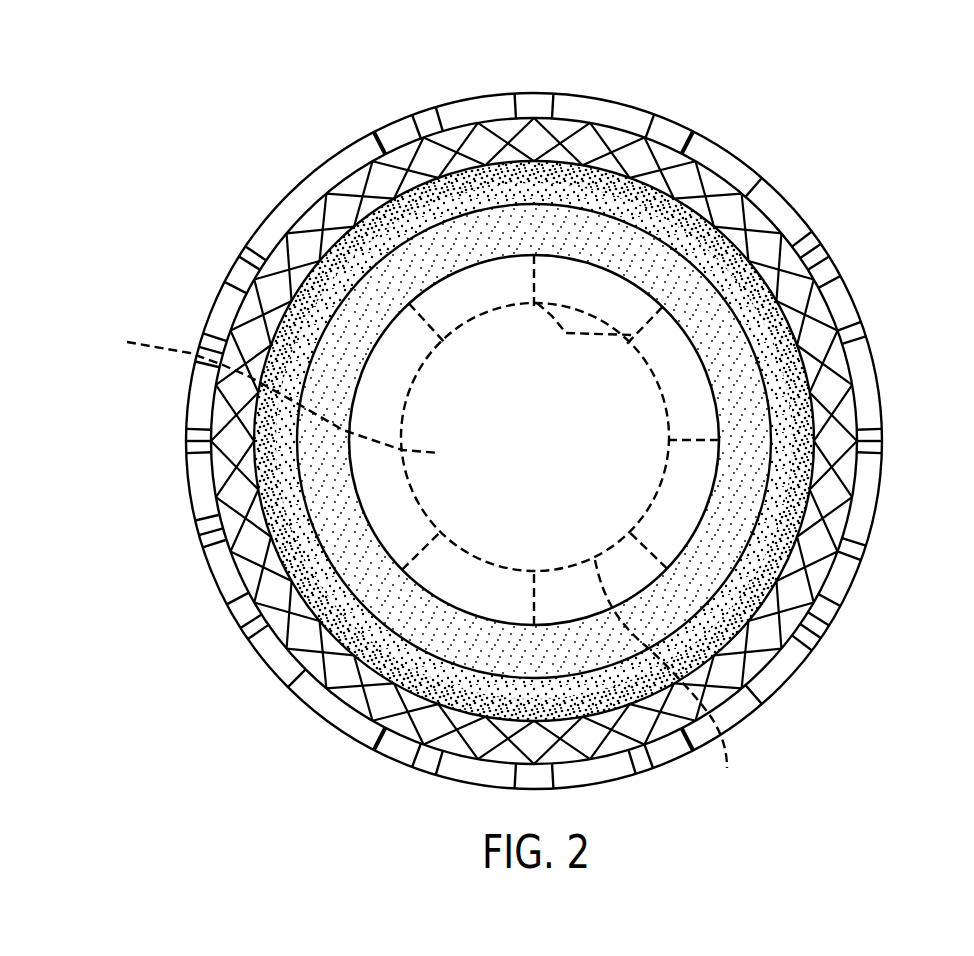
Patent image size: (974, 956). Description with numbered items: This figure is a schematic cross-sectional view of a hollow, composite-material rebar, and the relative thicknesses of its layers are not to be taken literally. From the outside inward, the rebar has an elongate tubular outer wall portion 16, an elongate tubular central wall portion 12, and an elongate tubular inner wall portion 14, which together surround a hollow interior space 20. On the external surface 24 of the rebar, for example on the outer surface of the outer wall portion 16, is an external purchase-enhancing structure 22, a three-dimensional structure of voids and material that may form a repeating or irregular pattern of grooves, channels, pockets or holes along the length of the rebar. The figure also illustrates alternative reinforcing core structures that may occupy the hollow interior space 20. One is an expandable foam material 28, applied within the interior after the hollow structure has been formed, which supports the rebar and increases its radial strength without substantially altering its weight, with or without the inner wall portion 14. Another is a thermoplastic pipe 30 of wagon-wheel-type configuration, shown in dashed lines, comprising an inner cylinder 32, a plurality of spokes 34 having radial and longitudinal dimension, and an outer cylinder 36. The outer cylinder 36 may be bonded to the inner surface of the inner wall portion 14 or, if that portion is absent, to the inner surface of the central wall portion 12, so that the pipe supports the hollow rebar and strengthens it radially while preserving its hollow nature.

The external surface 24 is at (678, 112).
The external purchase-enhancing structure 22 is at (733, 167).
The elongate tubular outer wall portion 16 is at (760, 252).
The elongate tubular central wall portion 12 is at (777, 345).
The elongate tubular inner wall portion 14 is at (747, 445).
The hollow interior space 20 is at (524, 449).
The outer cylinder 36 is at (698, 357).
The inner cylinder 32 is at (668, 451).
The spokes 34 is at (585, 335).
The thermoplastic pipe 30 is at (667, 679).
The expandable foam material 28 is at (268, 391).